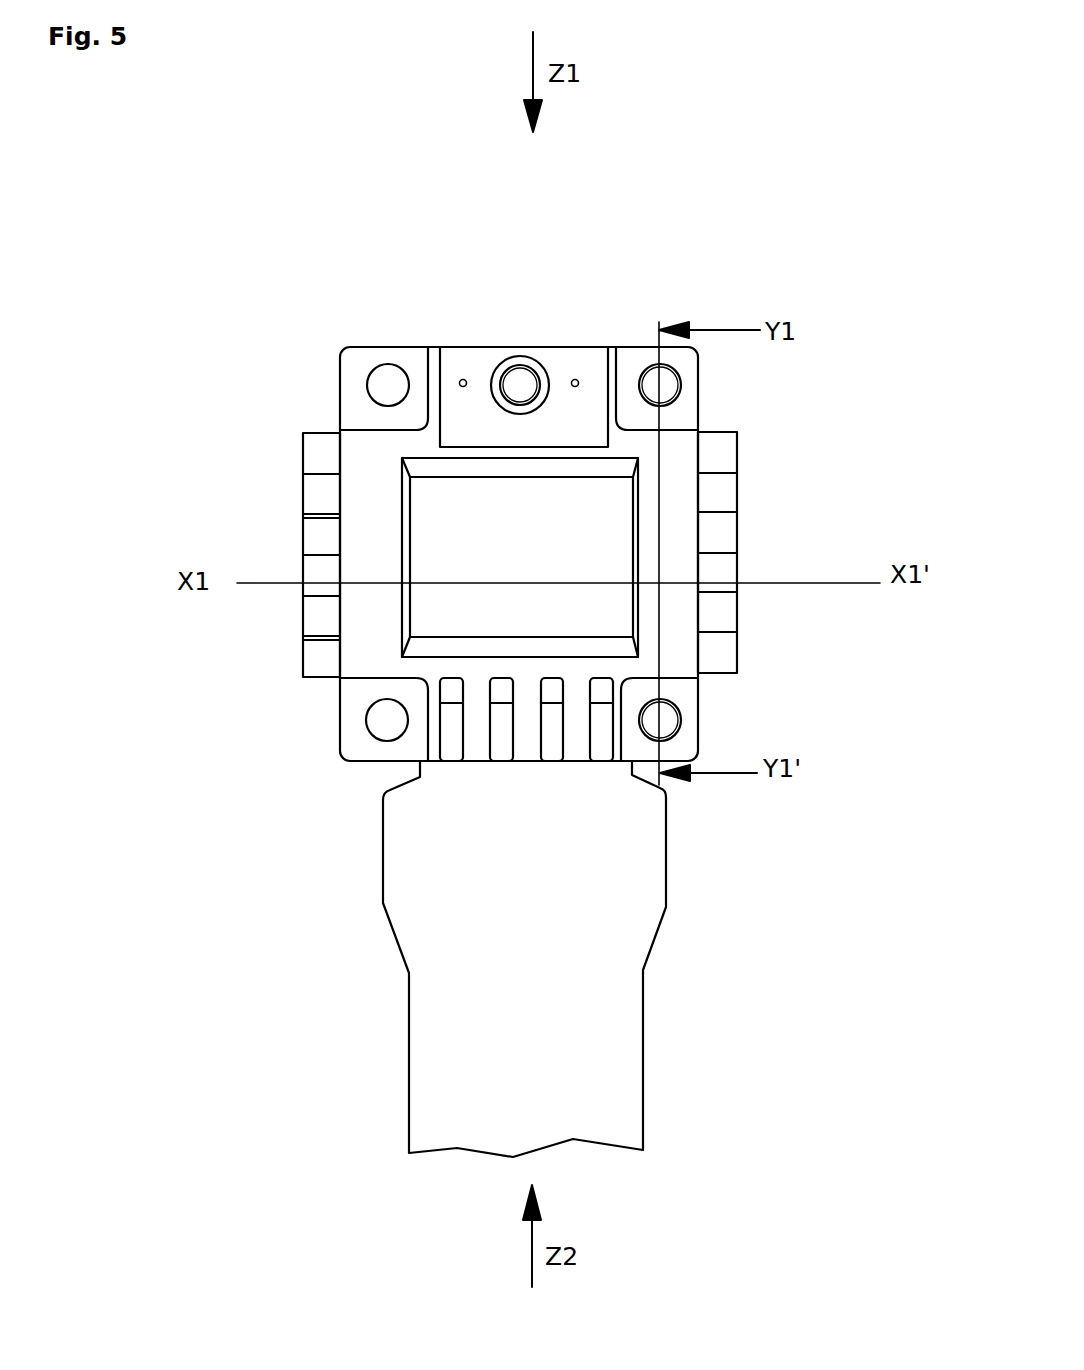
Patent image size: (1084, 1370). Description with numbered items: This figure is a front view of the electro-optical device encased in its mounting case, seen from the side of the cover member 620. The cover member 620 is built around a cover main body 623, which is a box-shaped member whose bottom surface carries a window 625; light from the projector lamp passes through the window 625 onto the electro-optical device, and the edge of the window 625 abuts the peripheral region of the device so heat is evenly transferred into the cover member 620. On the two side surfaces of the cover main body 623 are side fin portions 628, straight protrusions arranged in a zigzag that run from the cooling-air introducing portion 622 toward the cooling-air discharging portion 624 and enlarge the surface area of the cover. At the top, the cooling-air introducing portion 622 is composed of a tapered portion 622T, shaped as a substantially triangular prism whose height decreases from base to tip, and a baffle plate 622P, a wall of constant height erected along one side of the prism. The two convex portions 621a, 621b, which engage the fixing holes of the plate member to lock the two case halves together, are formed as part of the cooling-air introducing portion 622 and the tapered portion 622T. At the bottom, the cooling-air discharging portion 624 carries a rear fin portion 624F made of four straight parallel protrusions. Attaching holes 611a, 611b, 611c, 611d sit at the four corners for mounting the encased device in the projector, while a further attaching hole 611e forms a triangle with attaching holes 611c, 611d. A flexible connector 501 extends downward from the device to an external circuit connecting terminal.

The flexible connector 501 is at (410, 963).
The cover member 620 is at (762, 408).
The cooling-air introducing portion 622 is at (290, 426).
The baffle plate 622P is at (437, 348).
The tapered portion 622T is at (522, 425).
The cover main body 623 is at (288, 683).
The cooling-air discharging portion 624 is at (292, 684).
The rear fin portion 624F is at (553, 750).
The window 625 is at (437, 513).
The side fin portions 628 is at (738, 528).
The attaching hole 611a is at (648, 363).
The attaching hole 611b is at (378, 364).
The attaching hole 611c is at (680, 717).
The attaching hole 611d is at (377, 740).
The attaching hole 611e is at (521, 357).
The convex portion 621a is at (463, 379).
The convex portion 621b is at (575, 379).